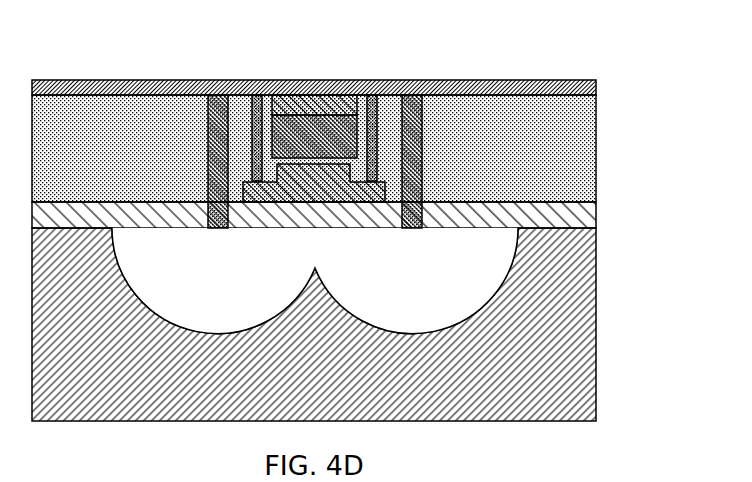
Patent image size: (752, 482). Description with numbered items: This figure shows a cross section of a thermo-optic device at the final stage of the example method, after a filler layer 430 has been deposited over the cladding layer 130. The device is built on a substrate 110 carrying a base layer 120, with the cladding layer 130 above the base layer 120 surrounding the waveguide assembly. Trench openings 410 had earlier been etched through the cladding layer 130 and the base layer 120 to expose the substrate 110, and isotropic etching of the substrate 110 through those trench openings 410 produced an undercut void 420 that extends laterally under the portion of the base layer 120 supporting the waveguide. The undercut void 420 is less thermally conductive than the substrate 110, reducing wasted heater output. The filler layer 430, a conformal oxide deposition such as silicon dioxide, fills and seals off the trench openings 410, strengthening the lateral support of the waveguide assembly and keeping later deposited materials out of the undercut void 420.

The substrate 110 is at (597, 323).
The base layer 120 is at (599, 212).
The cladding layer 130 is at (599, 147).
The trench openings 410 is at (421, 140).
The undercut void 420 is at (177, 268).
The filler layer 430 is at (313, 80).